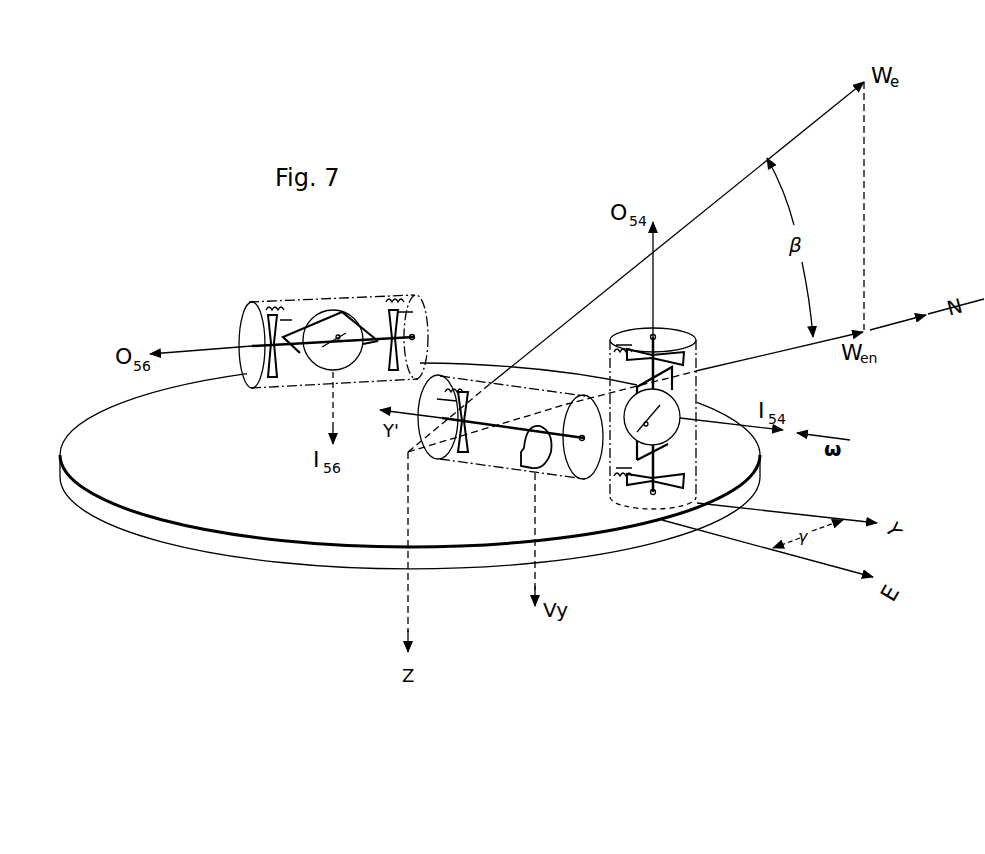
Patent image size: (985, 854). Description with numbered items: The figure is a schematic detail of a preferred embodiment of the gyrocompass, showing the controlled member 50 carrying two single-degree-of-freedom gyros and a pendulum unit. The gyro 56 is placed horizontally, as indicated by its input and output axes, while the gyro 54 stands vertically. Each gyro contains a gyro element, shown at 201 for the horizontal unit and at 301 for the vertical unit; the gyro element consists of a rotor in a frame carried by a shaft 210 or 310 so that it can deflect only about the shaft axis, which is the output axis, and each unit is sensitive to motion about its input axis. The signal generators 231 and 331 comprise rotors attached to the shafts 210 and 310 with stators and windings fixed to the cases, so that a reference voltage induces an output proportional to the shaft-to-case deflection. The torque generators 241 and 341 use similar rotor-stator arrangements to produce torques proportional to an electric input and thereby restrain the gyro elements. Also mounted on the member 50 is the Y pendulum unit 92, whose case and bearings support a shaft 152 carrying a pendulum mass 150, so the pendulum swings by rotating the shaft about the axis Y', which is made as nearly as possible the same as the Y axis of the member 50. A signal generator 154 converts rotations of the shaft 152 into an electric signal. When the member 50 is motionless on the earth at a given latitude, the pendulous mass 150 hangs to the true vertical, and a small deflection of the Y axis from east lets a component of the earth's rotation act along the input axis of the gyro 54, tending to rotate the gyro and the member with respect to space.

The controlled member 50 is at (185, 520).
The single-degree-of-freedom gyro 56 is at (351, 341).
The signal generator 231 is at (271, 380).
The torque generator 241 is at (405, 313).
The shaft 210 is at (407, 344).
The gyro element 201 is at (320, 374).
The Y pendulum unit 92 is at (510, 424).
The shaft 152 is at (513, 436).
The signal generator 154 is at (476, 414).
The pendulum mass 150 is at (520, 462).
The single-degree-of-freedom gyro 54 is at (670, 426).
The signal generator 331 is at (692, 353).
The torque generator 341 is at (637, 488).
The shaft 310 is at (690, 466).
The gyro element 301 is at (683, 432).